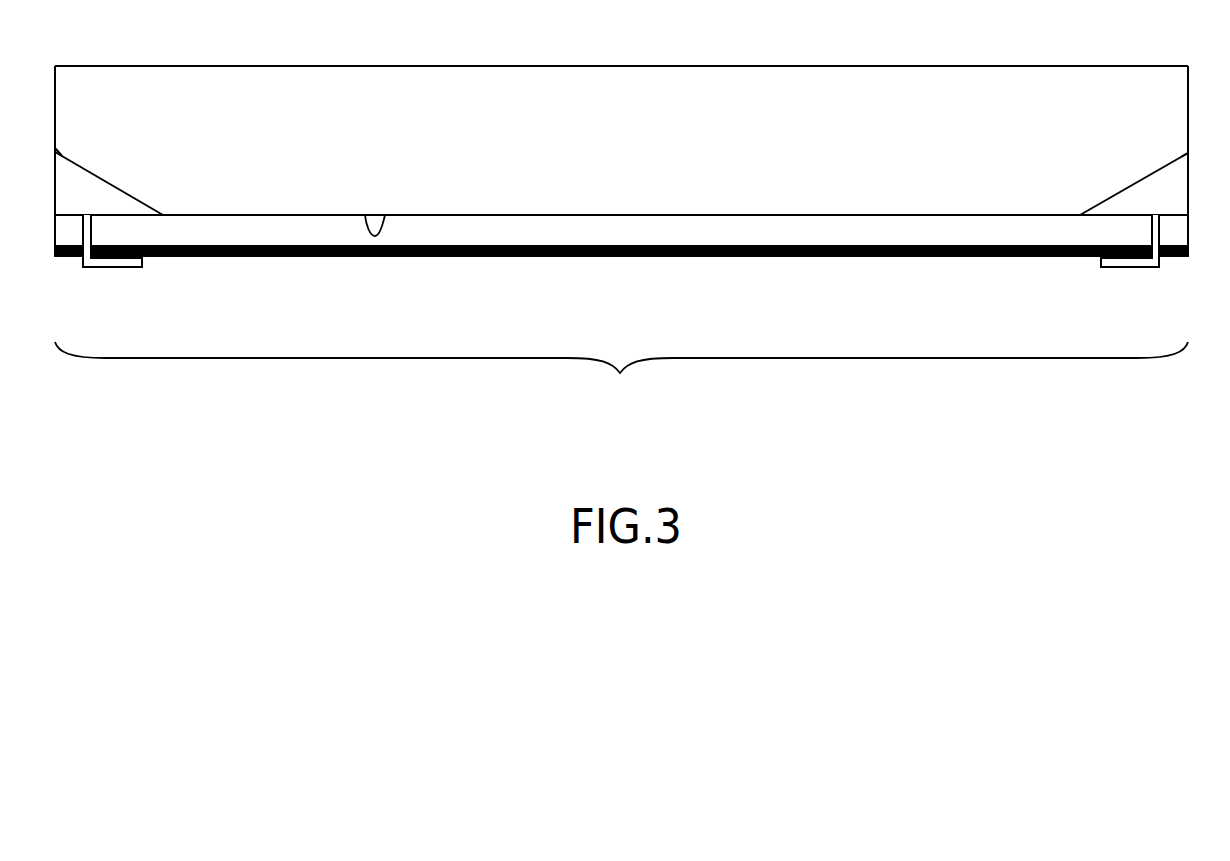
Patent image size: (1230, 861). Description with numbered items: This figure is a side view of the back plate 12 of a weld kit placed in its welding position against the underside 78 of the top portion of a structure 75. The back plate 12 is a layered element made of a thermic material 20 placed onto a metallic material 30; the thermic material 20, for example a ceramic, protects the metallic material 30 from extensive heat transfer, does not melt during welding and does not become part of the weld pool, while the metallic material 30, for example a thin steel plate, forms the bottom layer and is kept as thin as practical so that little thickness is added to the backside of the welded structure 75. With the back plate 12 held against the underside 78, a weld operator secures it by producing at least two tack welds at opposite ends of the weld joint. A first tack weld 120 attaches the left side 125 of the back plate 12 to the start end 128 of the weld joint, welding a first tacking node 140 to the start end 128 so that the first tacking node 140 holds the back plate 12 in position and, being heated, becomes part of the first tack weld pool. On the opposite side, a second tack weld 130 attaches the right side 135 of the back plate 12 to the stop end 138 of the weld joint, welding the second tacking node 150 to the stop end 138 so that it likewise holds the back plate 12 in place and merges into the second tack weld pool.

The back plate 12 is at (621, 236).
The thermic material 20 is at (620, 215).
The metallic material 30 is at (622, 257).
The structure 75 is at (622, 66).
The underside 78 is at (385, 215).
The first tack weld 120 is at (110, 183).
The left side 125 is at (203, 215).
The start end 128 is at (55, 152).
The second tack weld 130 is at (1134, 183).
The right side 135 is at (1002, 215).
The stop end 138 is at (1188, 153).
The first tacking node 140 is at (112, 267).
The second tacking node 150 is at (1130, 267).